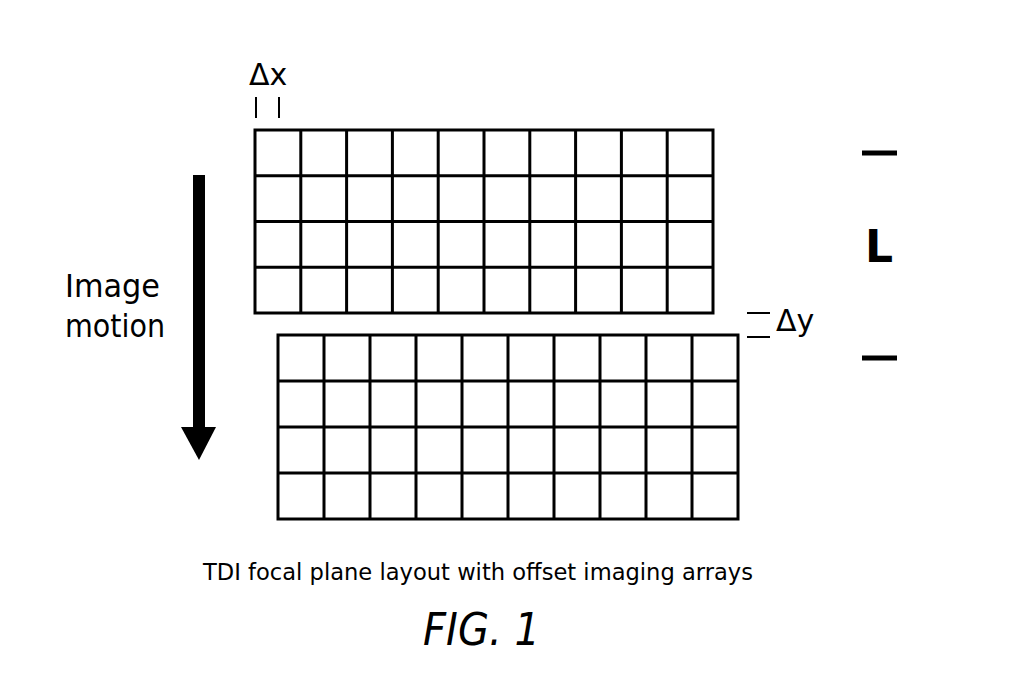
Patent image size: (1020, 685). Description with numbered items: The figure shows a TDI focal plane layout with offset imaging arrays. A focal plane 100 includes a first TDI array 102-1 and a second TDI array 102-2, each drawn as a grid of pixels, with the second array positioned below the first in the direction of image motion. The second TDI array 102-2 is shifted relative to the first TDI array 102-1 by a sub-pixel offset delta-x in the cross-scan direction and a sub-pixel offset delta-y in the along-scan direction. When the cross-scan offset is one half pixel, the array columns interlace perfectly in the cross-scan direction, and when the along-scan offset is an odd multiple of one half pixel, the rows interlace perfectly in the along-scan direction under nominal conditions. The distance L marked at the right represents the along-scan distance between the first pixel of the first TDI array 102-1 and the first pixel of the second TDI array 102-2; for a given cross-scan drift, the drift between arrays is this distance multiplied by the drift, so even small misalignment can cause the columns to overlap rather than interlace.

The focal plane 100 is at (476, 56).
The first TDI array 102-1 is at (713, 220).
The second TDI array 102-2 is at (738, 425).